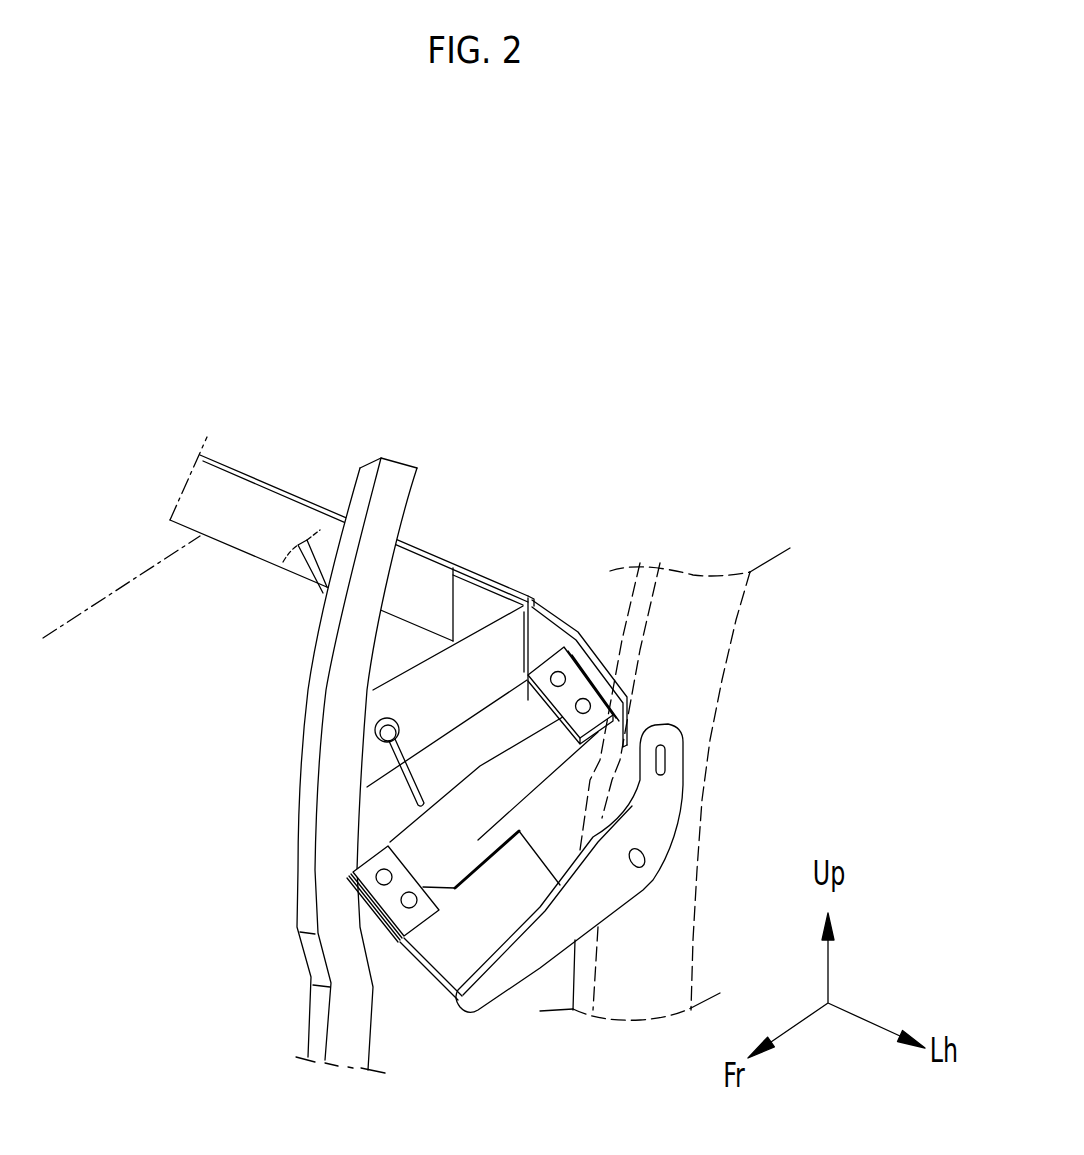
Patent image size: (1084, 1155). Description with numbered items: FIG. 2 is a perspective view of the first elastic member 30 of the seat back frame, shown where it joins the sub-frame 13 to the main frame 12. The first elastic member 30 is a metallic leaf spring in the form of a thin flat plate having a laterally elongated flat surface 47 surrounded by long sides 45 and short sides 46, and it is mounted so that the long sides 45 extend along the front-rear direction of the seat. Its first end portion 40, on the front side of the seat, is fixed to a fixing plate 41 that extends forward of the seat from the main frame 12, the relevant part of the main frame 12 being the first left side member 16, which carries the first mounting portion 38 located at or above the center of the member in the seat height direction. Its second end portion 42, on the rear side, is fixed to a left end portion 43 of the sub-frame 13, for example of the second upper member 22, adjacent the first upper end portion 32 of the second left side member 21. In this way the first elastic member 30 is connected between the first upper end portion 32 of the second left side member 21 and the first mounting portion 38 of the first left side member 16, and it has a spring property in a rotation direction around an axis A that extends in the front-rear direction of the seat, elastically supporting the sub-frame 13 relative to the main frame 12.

The main frame 12 is at (743, 613).
The sub-frame 13 is at (287, 923).
The first left side member 16 is at (725, 675).
The second left side member 21 is at (318, 795).
The second upper member 22 is at (437, 548).
The first elastic member 30 is at (517, 787).
The first upper end portion 32 is at (338, 682).
The first mounting portion 38 is at (690, 832).
The first end portion 40 is at (394, 934).
The fixing plate 41 is at (500, 990).
The second end portion 42 is at (574, 693).
The left end portion 43 is at (563, 617).
The long sides 45 is at (503, 760).
The short sides 46 is at (413, 869).
The flat surface 47 is at (448, 817).
The axis A is at (146, 587).